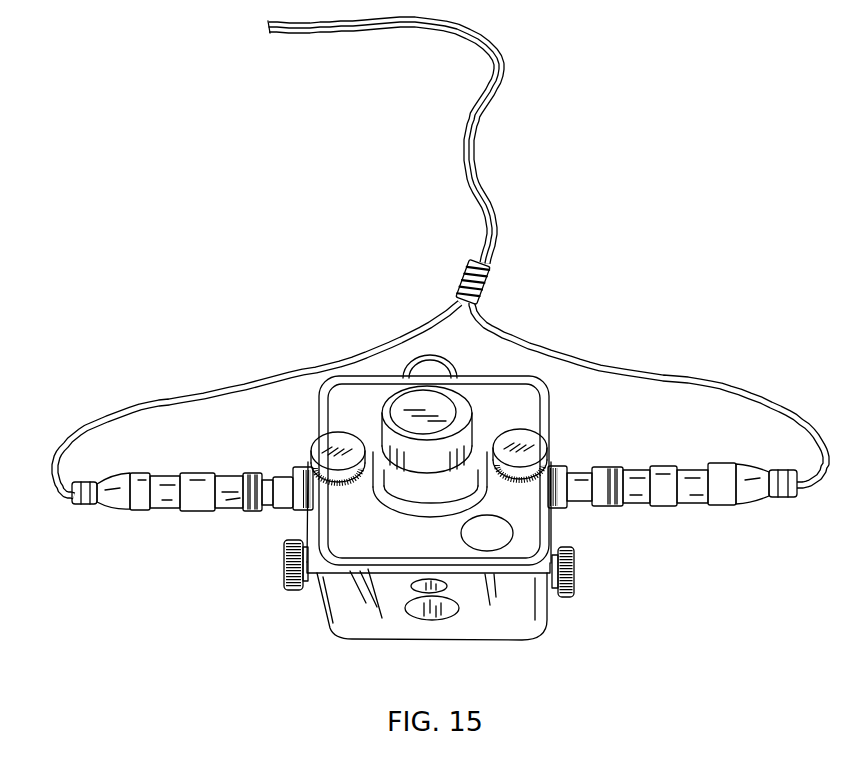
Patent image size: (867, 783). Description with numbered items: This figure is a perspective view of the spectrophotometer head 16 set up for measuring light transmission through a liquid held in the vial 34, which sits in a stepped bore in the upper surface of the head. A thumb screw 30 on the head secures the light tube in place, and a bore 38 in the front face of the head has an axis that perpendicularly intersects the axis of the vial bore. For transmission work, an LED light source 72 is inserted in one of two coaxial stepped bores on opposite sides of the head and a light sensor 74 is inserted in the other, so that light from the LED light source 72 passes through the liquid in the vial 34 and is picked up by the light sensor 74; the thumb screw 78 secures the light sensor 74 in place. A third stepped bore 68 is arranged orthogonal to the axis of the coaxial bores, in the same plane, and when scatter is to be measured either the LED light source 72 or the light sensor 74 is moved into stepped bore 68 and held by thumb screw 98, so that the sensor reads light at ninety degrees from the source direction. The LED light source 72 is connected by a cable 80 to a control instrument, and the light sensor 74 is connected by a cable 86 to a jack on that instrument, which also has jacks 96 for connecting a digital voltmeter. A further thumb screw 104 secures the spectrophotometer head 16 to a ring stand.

The spectrophotometer head 16 is at (532, 638).
The thumb screw 30 is at (454, 381).
The vial 34 is at (400, 412).
The bore 38 is at (445, 615).
The stepped bore 68 is at (423, 597).
The LED light source 72 is at (747, 487).
The light sensor 74 is at (146, 505).
The thumb screw 78 is at (313, 452).
The cable 80 is at (570, 365).
The cable 86 is at (147, 404).
The jacks 96 is at (548, 446).
The thumb screw 98 is at (283, 565).
The thumb screw 104 is at (576, 570).